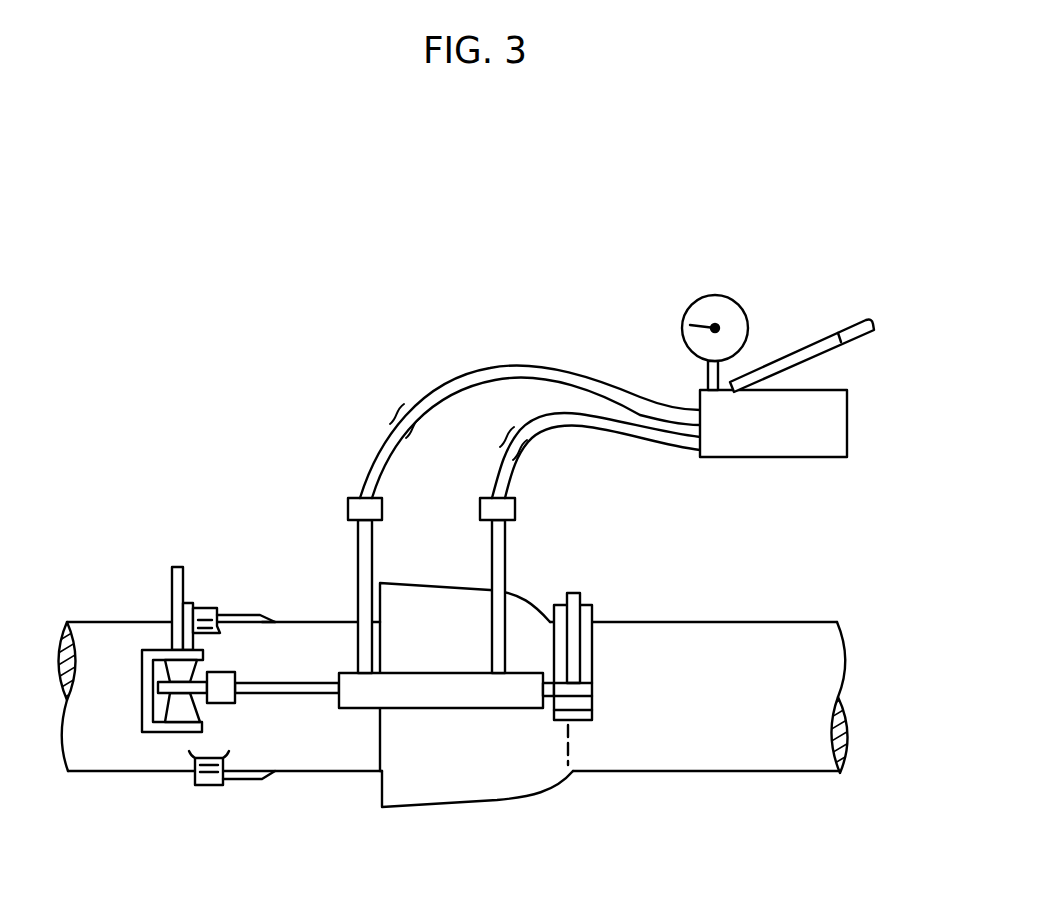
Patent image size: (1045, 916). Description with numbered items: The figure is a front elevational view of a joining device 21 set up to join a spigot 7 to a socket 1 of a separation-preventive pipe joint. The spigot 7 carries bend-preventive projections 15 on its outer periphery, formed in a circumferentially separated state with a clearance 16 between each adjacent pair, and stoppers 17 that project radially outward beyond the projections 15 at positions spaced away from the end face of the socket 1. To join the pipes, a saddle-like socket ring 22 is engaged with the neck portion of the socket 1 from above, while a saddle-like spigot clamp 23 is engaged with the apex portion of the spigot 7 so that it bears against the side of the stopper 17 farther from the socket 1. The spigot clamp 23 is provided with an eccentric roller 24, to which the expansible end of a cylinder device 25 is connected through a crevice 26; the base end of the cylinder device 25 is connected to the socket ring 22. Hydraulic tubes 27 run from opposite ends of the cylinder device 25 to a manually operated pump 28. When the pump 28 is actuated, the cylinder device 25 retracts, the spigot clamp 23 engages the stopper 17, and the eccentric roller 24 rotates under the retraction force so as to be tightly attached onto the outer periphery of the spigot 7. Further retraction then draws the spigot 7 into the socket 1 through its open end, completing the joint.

The socket 1 is at (430, 788).
The spigot 7 is at (345, 760).
The bend-preventive projections 15 is at (257, 615).
The clearance 16 is at (250, 635).
The stopper 17 is at (203, 610).
The joining device 21 is at (592, 342).
The socket ring 22 is at (595, 612).
The spigot clamp 23 is at (173, 610).
The eccentric roller 24 is at (178, 713).
The cylinder device 25 is at (487, 694).
The crevice 26 is at (227, 697).
The hydraulic tubes 27 is at (557, 413).
The manually operated pump 28 is at (837, 425).